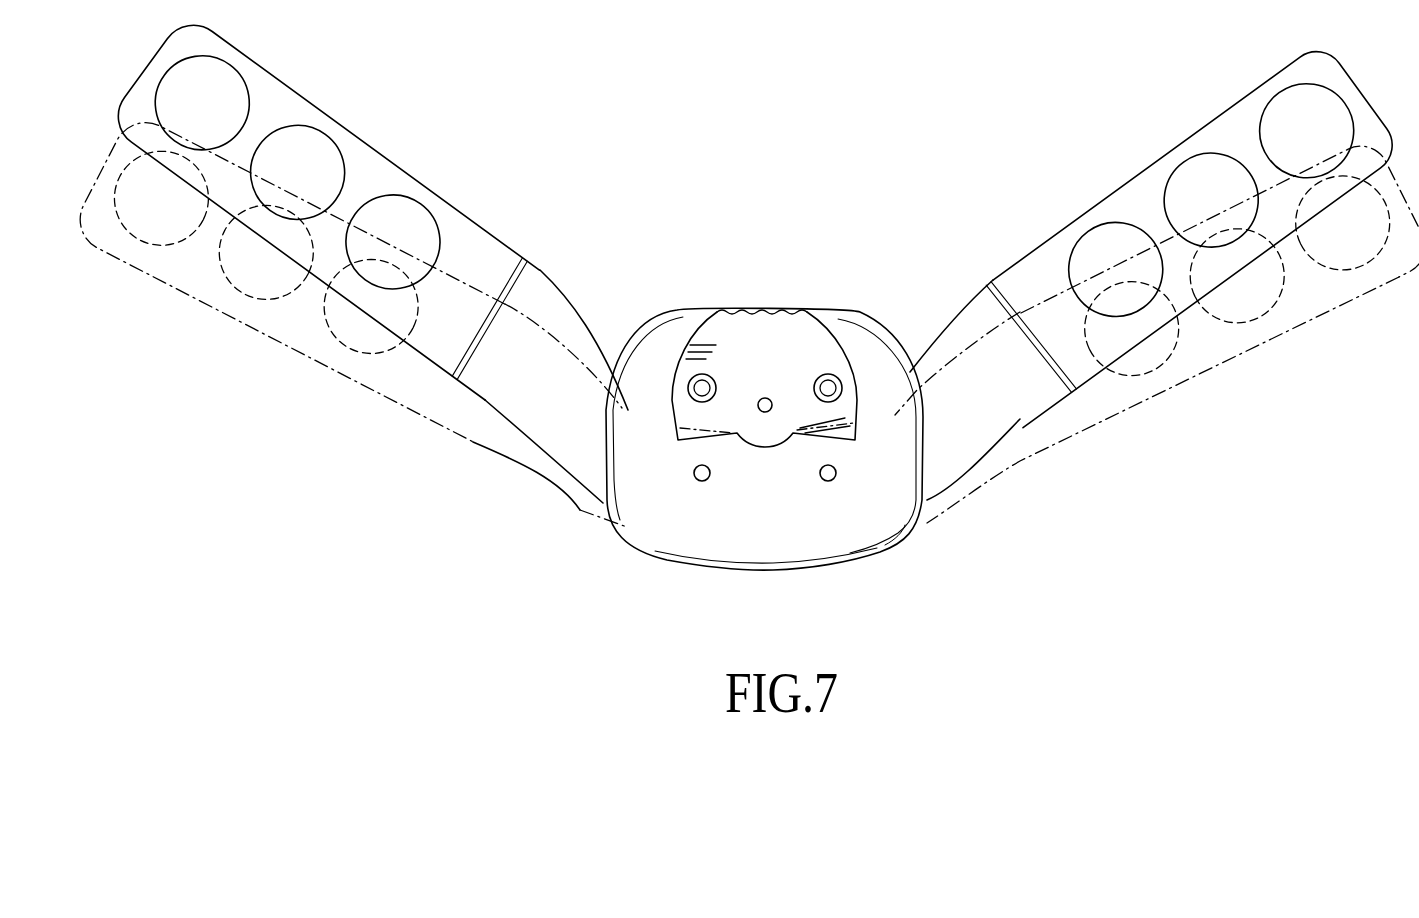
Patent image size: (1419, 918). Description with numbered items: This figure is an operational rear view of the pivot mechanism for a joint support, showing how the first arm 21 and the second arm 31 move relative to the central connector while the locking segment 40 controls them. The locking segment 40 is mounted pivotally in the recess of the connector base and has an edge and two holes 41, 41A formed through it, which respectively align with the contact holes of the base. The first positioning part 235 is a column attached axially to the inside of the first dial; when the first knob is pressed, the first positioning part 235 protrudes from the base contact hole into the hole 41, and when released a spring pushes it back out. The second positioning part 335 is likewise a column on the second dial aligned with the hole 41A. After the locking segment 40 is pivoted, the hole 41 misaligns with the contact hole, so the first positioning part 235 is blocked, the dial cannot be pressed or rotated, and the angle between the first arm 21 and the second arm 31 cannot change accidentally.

The first arm 21 is at (1033, 263).
The second arm 31 is at (527, 340).
The locking segment 40 is at (778, 332).
The hole 41 is at (834, 395).
The hole 41A is at (703, 392).
The first positioning part 235 is at (830, 383).
The second positioning part 335 is at (703, 392).